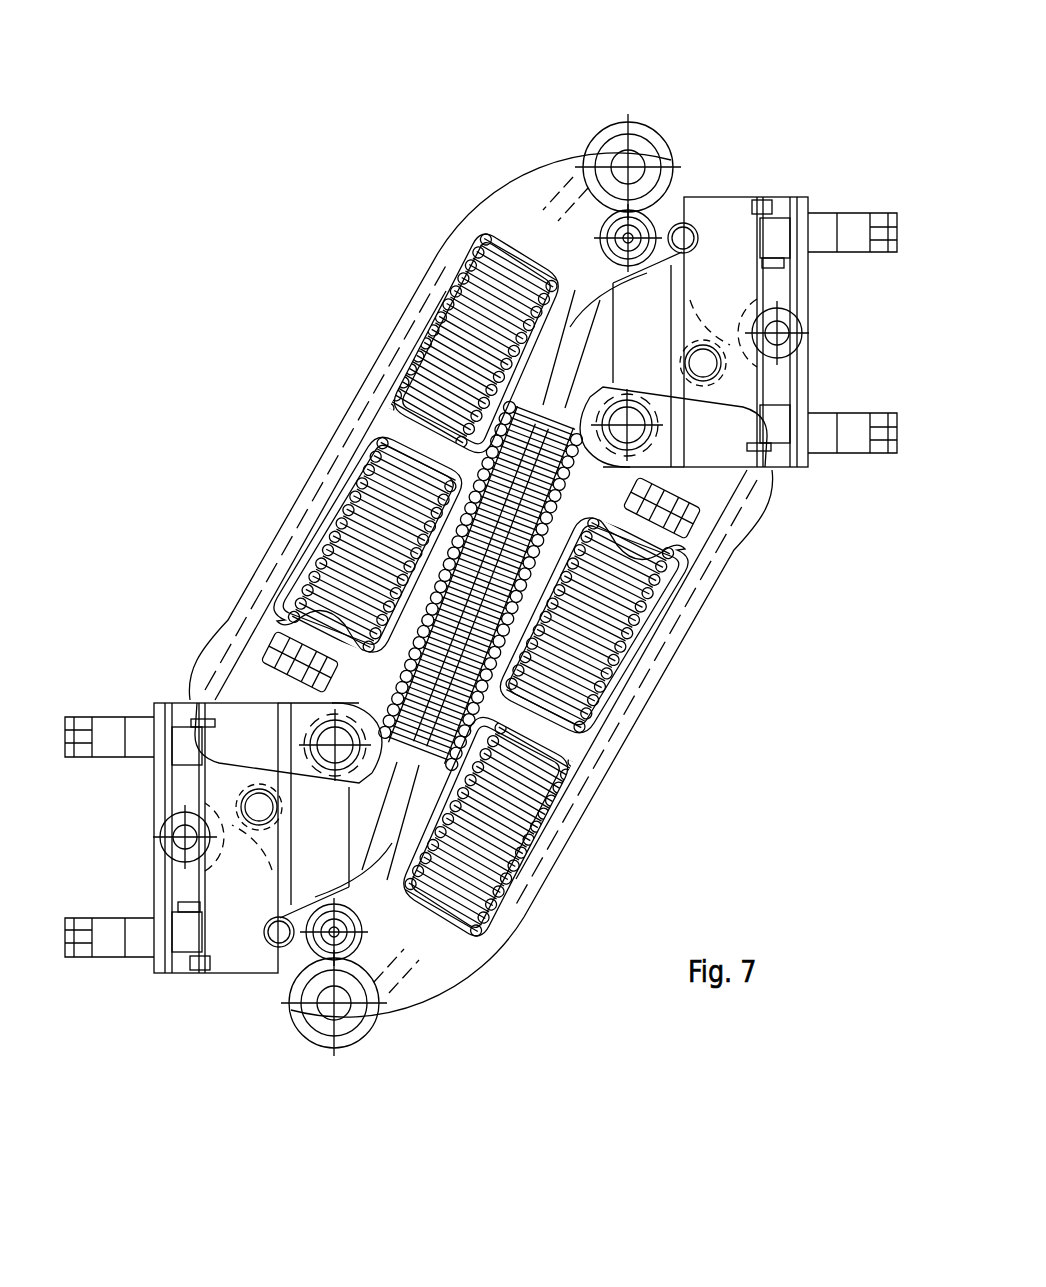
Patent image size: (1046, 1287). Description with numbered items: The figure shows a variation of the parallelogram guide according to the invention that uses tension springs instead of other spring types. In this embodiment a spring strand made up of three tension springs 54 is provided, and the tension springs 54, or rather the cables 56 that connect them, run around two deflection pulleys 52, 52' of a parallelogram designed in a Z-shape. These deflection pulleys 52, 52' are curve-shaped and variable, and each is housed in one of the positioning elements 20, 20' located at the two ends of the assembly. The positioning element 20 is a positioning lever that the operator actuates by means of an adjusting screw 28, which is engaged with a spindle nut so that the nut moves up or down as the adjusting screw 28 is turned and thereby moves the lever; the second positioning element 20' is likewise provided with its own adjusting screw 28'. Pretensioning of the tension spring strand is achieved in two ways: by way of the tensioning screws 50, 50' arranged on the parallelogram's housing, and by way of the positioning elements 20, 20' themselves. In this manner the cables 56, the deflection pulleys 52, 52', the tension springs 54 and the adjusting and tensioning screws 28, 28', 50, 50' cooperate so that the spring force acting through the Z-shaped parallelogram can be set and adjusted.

The positioning element 20 is at (272, 888).
The positioning element 20' is at (710, 292).
The adjusting screw 28 is at (127, 789).
The adjusting screw 28' is at (839, 389).
The tensioning screw 50 is at (730, 545).
The tensioning screw 50' is at (219, 627).
The deflection pulley 52 is at (347, 1054).
The deflection pulley 52' is at (674, 124).
The tension springs 54 is at (415, 378).
The cables 56 is at (567, 190).